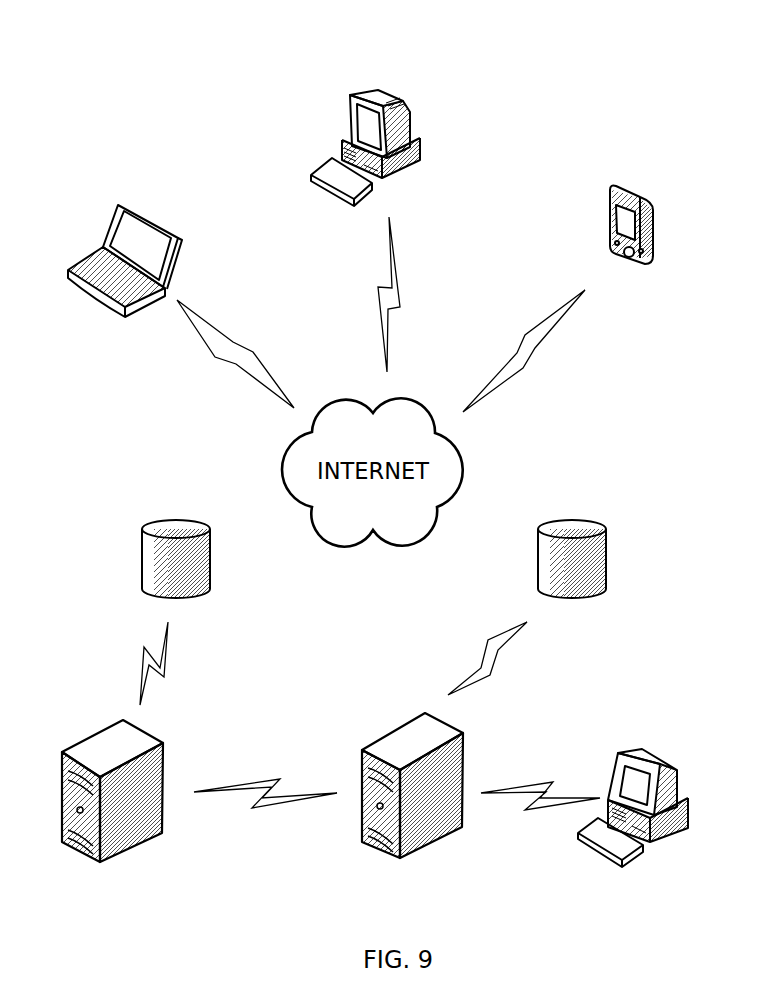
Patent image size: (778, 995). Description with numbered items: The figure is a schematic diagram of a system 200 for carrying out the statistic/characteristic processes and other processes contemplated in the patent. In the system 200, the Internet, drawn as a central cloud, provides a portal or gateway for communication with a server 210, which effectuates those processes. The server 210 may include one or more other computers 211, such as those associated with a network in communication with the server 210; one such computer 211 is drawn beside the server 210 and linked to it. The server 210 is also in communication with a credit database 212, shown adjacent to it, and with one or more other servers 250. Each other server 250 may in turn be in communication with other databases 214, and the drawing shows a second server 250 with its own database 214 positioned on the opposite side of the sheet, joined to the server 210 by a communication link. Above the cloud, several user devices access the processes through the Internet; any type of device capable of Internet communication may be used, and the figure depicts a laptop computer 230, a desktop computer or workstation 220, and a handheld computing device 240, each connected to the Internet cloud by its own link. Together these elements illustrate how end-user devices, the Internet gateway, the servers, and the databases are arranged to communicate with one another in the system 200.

The system 200 is at (592, 76).
The server 210 is at (460, 732).
The other computers 211 is at (667, 763).
The credit database 212 is at (607, 567).
The other databases 214 is at (142, 560).
The desktop computer or workstation 220 is at (397, 98).
The laptop computer 230 is at (130, 204).
The handheld computing device 240 is at (638, 190).
The other servers 250 is at (147, 733).